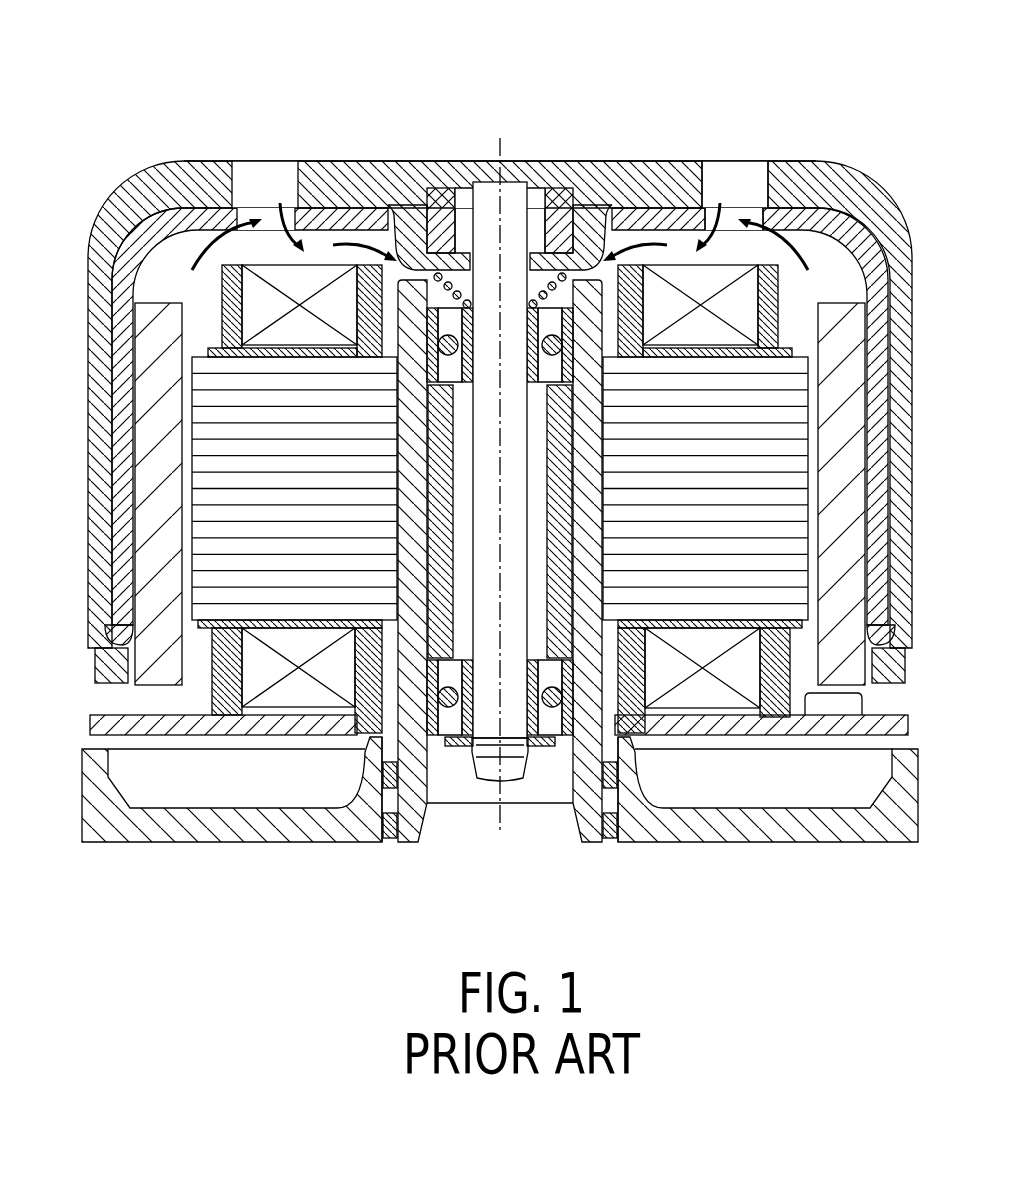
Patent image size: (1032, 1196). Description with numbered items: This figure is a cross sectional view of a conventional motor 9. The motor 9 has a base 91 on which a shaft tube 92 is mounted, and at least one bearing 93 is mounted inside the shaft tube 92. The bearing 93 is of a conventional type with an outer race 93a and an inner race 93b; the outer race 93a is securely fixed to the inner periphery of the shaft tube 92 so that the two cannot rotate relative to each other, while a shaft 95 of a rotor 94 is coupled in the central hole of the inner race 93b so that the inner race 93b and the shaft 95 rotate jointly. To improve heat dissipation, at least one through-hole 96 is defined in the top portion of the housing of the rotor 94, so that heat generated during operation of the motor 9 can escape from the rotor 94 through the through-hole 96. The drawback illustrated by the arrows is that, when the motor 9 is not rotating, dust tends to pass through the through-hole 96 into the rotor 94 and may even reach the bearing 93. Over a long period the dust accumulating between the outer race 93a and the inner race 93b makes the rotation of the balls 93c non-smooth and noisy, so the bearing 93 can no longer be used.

The motor 9 is at (472, 481).
The base 91 is at (690, 836).
The shaft tube 92 is at (400, 423).
The bearing 93 is at (435, 490).
The outer race 93a is at (432, 277).
The inner race 93b is at (463, 303).
The balls 93c is at (450, 280).
The rotor 94 is at (323, 177).
The shaft 95 is at (514, 205).
The through-hole 96 is at (733, 172).